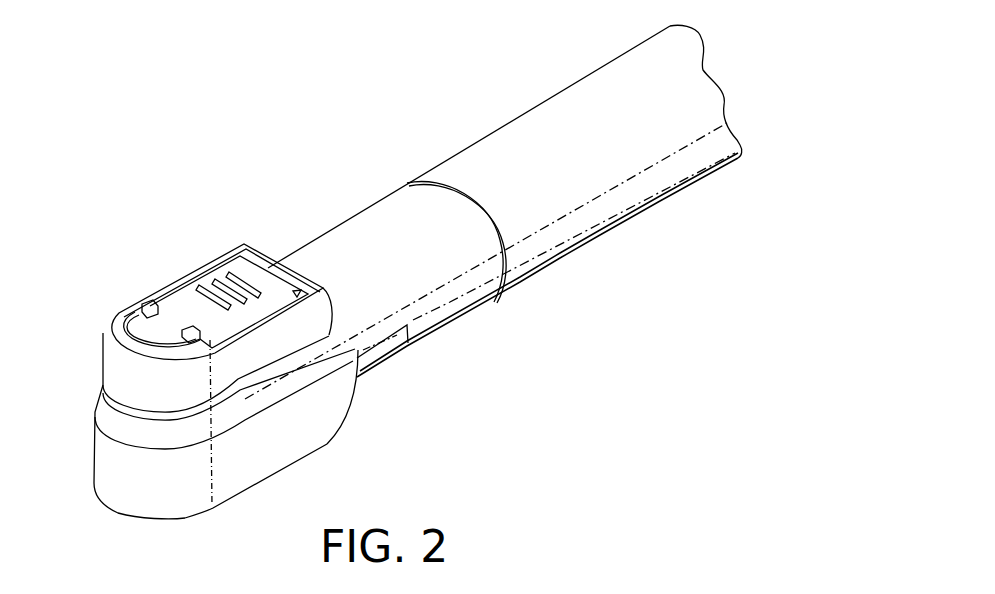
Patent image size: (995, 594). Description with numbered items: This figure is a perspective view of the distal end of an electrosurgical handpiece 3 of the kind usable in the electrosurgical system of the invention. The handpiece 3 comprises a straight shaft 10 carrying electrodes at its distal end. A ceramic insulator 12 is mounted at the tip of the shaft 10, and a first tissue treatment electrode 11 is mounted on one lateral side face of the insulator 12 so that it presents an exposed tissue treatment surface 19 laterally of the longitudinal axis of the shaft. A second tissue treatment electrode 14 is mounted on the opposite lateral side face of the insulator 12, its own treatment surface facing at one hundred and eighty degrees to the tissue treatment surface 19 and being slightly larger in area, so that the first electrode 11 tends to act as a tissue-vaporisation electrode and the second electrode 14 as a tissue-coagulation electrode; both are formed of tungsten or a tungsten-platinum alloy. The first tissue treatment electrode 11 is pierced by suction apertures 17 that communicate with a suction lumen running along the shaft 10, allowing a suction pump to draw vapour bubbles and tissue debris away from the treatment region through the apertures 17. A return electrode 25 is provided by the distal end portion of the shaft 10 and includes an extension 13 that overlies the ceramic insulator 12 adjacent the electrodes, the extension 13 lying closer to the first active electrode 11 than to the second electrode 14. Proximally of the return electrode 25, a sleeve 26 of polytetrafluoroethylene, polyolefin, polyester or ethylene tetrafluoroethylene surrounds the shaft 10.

The handpiece 3 is at (605, 65).
The shaft 10 is at (530, 118).
The first tissue treatment electrode 11 is at (174, 358).
The ceramic insulator 12 is at (105, 362).
The extension 13 is at (299, 378).
The second tissue treatment electrode 14 is at (100, 468).
The suction apertures 17 is at (218, 281).
The tissue treatment surface 19 is at (185, 300).
The return electrode 25 is at (457, 308).
The sleeve 26 is at (620, 225).